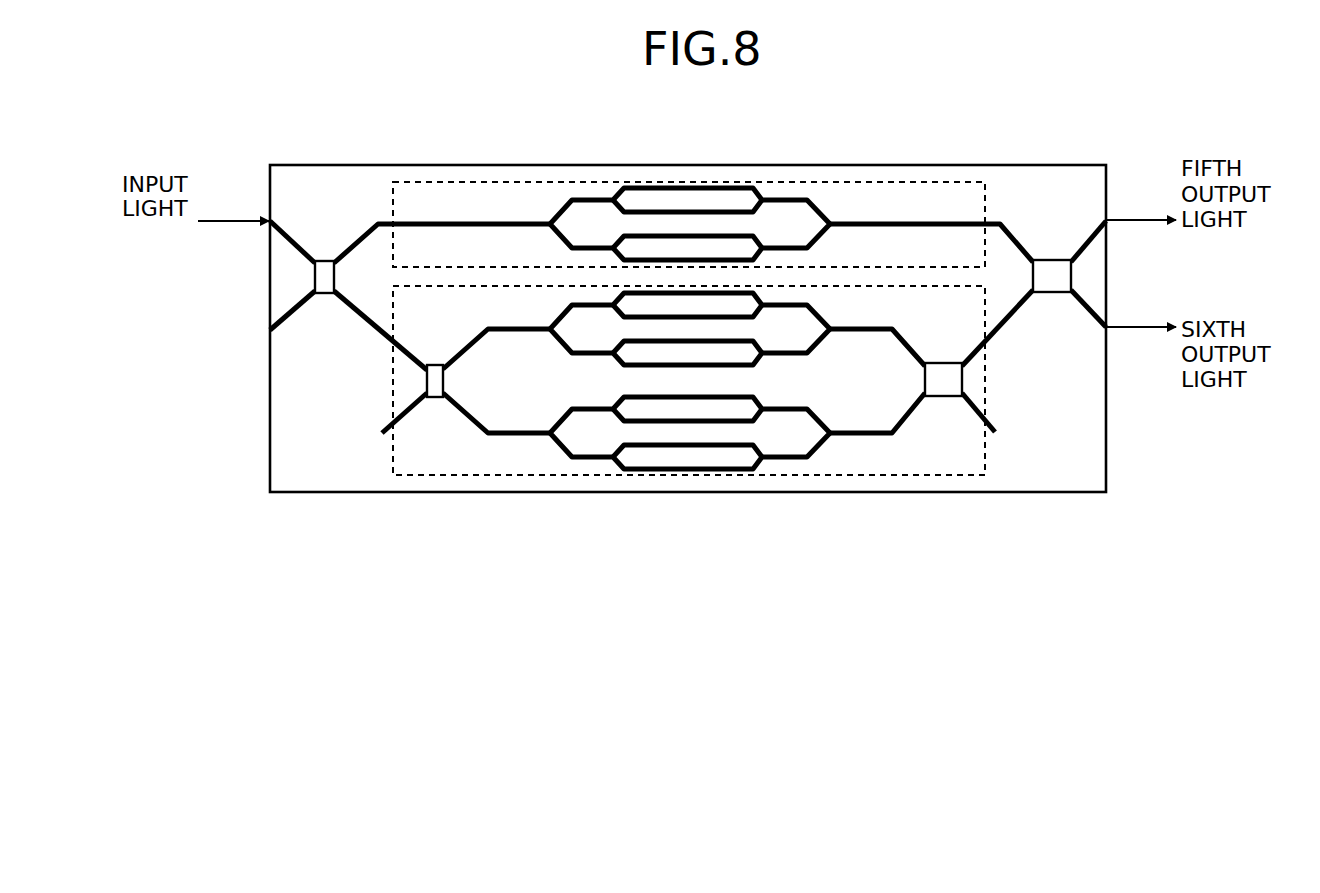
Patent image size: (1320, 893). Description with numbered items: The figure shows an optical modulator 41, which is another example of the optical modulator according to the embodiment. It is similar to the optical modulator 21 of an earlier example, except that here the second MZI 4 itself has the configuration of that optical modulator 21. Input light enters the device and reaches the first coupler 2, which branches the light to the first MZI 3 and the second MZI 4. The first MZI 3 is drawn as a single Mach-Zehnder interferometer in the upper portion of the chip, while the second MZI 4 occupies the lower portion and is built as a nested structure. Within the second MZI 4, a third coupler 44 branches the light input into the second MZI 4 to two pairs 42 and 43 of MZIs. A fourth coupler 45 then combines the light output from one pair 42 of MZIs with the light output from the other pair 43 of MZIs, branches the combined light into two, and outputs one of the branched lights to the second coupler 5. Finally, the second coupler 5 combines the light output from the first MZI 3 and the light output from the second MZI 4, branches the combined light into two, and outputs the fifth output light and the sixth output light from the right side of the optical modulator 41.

The first coupler 2 is at (325, 260).
The first Mach-Zehnder interferometer 3 is at (648, 183).
The second MZI 4 is at (800, 475).
The second coupler 5 is at (1055, 260).
The optical modulator 21 is at (647, 475).
The optical modulator 41 is at (841, 126).
The pair of MZIs 42 is at (587, 353).
The pair of MZIs 43 is at (690, 478).
The third coupler 44 is at (435, 397).
The fourth coupler 45 is at (943, 397).